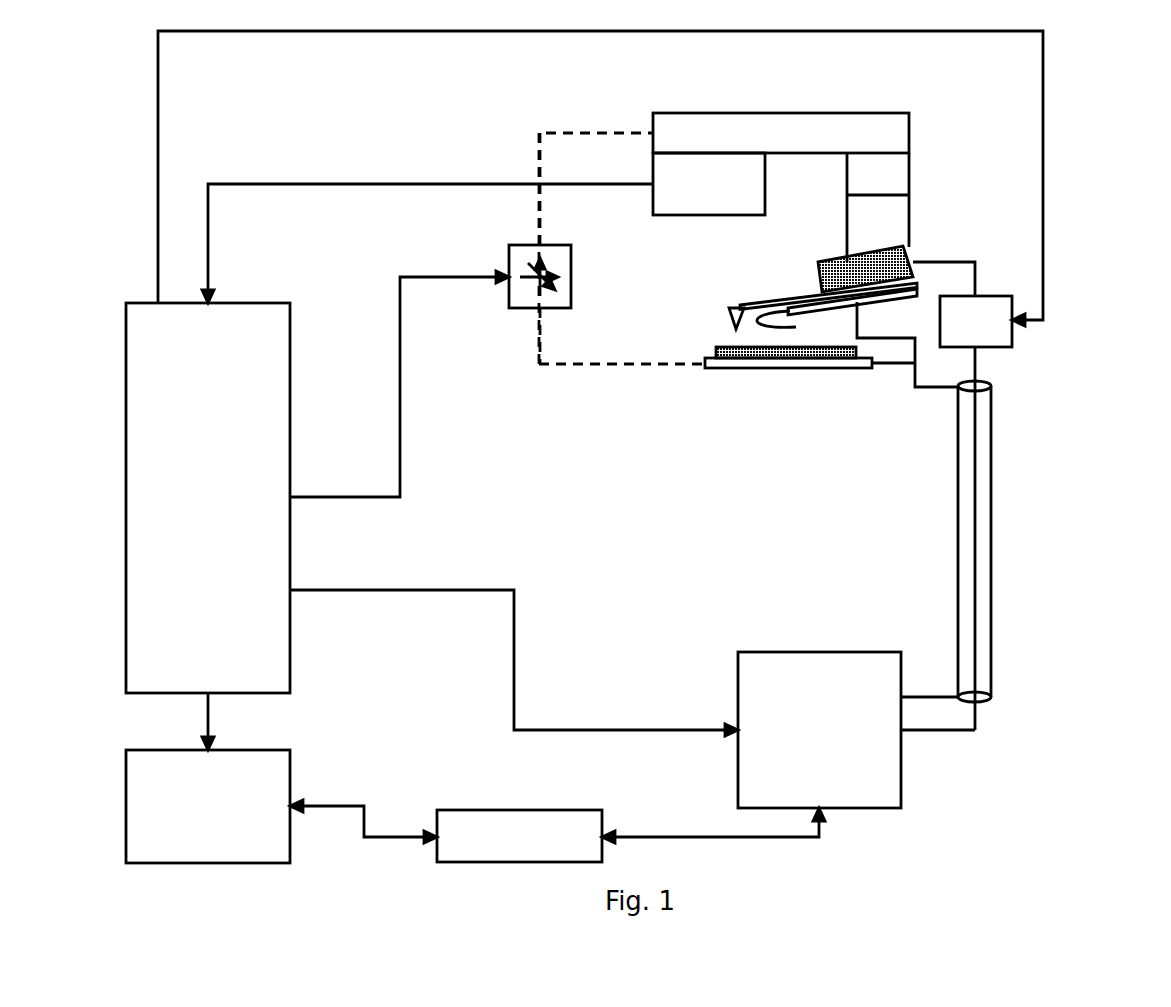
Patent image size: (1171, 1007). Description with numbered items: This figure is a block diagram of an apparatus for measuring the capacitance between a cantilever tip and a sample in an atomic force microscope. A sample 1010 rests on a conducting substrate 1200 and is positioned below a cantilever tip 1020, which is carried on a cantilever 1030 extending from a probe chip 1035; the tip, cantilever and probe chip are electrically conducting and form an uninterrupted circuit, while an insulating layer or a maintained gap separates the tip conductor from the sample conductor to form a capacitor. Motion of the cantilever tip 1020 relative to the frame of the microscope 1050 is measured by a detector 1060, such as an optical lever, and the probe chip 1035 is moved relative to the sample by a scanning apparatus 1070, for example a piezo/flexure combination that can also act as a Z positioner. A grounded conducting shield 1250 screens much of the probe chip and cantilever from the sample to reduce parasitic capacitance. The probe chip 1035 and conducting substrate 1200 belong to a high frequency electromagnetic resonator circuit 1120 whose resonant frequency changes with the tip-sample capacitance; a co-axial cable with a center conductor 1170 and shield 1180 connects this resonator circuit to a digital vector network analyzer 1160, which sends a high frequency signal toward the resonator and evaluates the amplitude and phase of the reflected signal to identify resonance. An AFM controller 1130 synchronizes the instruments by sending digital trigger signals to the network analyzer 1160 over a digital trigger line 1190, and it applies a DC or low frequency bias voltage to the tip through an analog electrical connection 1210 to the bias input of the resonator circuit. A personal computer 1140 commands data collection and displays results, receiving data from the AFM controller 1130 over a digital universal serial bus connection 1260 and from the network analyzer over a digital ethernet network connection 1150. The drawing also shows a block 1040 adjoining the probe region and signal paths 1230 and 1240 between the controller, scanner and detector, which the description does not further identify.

The sample 1010 is at (717, 350).
The cantilever tip 1020 is at (733, 309).
The cantilever 1030 is at (772, 303).
The probe chip 1035 is at (898, 257).
The probe holder block 1040 is at (909, 217).
The frame of the microscope 1050 is at (909, 113).
The detector 1060 is at (709, 184).
The scanning apparatus 1070 is at (571, 277).
The high frequency electromagnetic resonator circuit 1120 is at (976, 321).
The AFM controller 1130 is at (208, 498).
The personal computer 1140 is at (208, 806).
The digital ethernet network connection 1150 is at (557, 831).
The digital vector network analyzer 1160 is at (819, 730).
The center conductor 1170 is at (975, 730).
The shield 1180 is at (991, 495).
The digital trigger line 1190 is at (514, 622).
The conducting substrate 1200 is at (788, 368).
The analog electrical connection 1210 is at (158, 148).
The scanner control line 1230 is at (400, 497).
The detector signal line 1240 is at (427, 243).
The grounded conducting shield 1250 is at (816, 324).
The digital universal serial bus connection 1260 is at (208, 735).